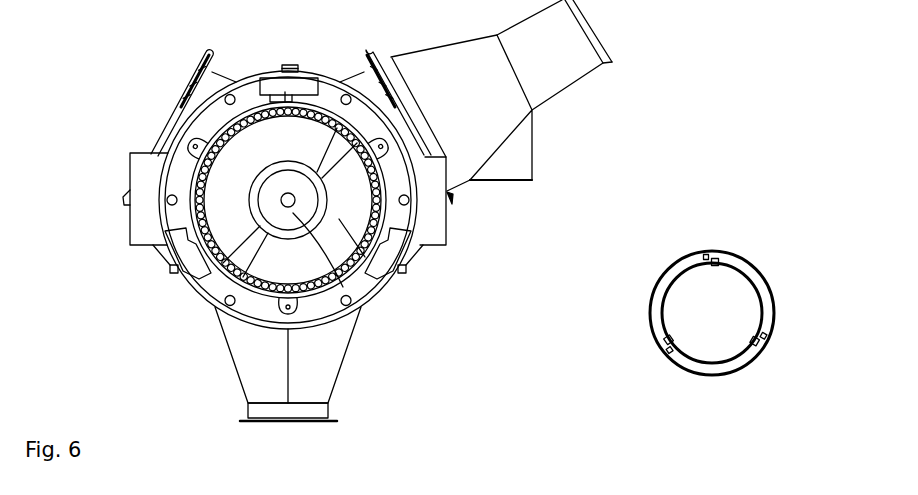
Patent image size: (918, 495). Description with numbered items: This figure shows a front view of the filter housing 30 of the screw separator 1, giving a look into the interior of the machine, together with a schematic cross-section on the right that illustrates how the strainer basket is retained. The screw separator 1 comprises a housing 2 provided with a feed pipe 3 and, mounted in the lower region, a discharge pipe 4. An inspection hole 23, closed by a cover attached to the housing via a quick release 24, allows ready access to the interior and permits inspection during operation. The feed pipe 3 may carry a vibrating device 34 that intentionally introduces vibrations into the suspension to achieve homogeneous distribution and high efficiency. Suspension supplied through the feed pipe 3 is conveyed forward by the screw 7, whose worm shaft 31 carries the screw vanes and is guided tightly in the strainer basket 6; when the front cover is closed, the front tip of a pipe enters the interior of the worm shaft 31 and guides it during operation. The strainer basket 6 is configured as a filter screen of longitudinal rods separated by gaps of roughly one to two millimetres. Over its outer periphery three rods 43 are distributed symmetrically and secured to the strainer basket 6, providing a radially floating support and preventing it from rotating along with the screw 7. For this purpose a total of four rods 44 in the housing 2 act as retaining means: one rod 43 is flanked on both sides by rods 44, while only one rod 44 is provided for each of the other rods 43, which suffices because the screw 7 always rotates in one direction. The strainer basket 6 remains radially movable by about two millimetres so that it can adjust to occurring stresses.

The screw separator 1 is at (83, 52).
The housing 2 is at (678, 252).
The feed pipe 3 is at (613, 42).
The discharge pipe 4 is at (307, 427).
The strainer basket 6 is at (344, 217).
The screw 7 is at (388, 250).
The inspection hole 23 is at (180, 92).
The quick release 24 is at (203, 53).
The filter housing 30 is at (273, 63).
The worm shaft 31 is at (365, 298).
The vibrating device 34 is at (522, 149).
The rods 43 is at (756, 339).
The rods 44 is at (700, 247).